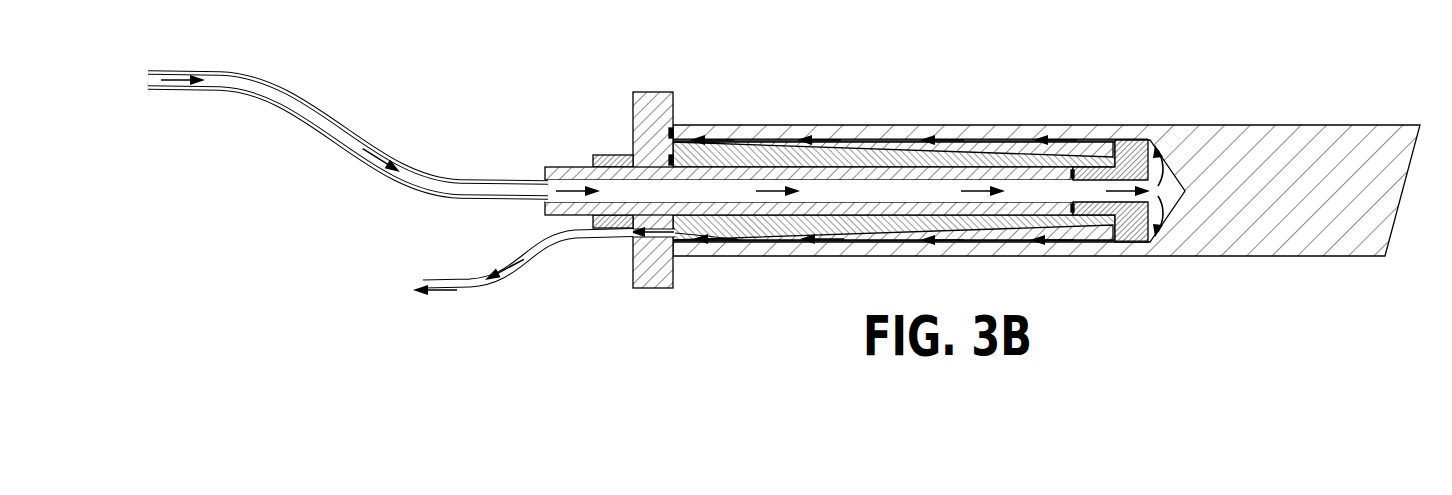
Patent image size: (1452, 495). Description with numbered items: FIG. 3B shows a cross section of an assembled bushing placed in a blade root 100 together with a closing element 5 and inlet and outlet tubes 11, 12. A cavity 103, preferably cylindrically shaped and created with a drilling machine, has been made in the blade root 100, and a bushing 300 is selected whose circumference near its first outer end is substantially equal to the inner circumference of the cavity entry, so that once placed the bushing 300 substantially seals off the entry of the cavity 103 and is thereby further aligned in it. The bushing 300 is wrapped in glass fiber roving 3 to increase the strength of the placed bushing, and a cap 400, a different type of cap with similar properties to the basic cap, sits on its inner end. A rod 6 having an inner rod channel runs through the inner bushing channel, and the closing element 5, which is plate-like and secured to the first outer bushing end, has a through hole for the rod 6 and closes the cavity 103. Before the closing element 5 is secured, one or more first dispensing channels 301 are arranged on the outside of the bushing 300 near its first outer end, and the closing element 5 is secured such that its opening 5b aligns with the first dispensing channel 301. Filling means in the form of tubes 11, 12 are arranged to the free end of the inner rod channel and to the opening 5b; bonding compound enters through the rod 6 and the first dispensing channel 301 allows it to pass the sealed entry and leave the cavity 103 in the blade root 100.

The blade root 100 is at (1240, 147).
The cavity 103 is at (1173, 190).
The cap 400 is at (1130, 155).
The glass fiber roving 3 is at (1018, 148).
The bushing 300 is at (781, 152).
The first dispensing channel 301 is at (503, 0).
The closing element 5 is at (650, 107).
The opening 5b is at (660, 232).
The rod 6 is at (563, 177).
The tube 11 is at (222, 70).
The tube 12 is at (447, 290).